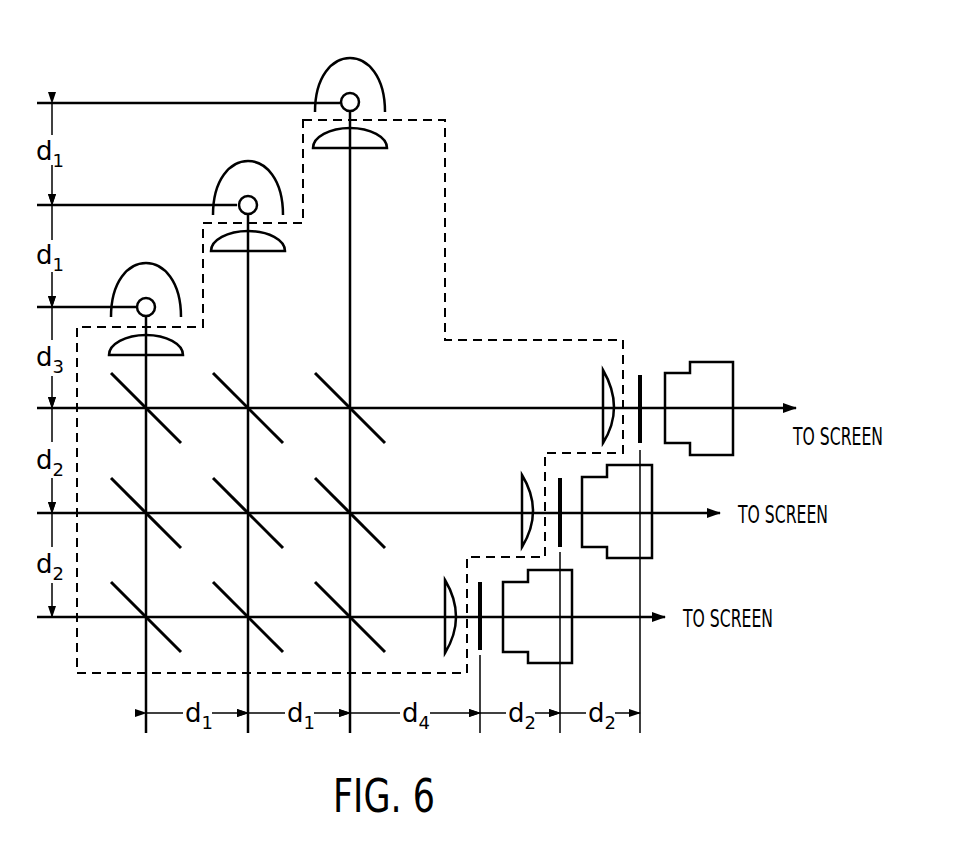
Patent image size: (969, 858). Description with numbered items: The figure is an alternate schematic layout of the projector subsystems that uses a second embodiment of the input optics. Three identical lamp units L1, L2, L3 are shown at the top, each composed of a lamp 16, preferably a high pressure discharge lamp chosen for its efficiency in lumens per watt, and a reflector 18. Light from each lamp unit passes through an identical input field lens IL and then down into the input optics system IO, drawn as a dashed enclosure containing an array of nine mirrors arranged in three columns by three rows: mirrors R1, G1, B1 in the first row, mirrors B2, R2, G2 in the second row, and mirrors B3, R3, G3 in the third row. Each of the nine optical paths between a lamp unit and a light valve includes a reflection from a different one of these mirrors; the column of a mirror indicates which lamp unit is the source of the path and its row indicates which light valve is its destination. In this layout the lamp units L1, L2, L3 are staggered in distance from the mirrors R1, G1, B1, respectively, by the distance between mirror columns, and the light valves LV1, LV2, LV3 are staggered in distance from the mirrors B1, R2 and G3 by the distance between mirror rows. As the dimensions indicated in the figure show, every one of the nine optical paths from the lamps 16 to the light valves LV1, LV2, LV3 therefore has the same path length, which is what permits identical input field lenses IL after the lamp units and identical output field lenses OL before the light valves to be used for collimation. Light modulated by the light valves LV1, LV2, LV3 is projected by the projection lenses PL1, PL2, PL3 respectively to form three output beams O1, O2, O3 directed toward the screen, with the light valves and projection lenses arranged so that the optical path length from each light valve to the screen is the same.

The lamp 16 is at (358, 100).
The reflector 18 is at (360, 66).
The lamp unit L1 is at (109, 288).
The lamp unit L2 is at (213, 185).
The lamp unit L3 is at (334, 59).
The input field lens IL is at (372, 150).
The input optics system IO is at (447, 242).
The mirror R1 is at (177, 437).
The mirror G1 is at (280, 437).
The mirror B1 is at (382, 437).
The mirror B2 is at (221, 486).
The mirror R2 is at (324, 486).
The mirror G2 is at (180, 540).
The mirror B3 is at (178, 645).
The mirror R3 is at (280, 645).
The mirror G3 is at (382, 645).
The output field lens OL is at (600, 398).
The light valve LV1 is at (640, 372).
The light valve LV2 is at (560, 476).
The light valve LV3 is at (480, 580).
The projection lens PL1 is at (733, 375).
The projection lens PL2 is at (652, 488).
The projection lens PL3 is at (572, 600).
The output beam O1 is at (780, 412).
The output beam O2 is at (693, 518).
The output beam O3 is at (620, 622).